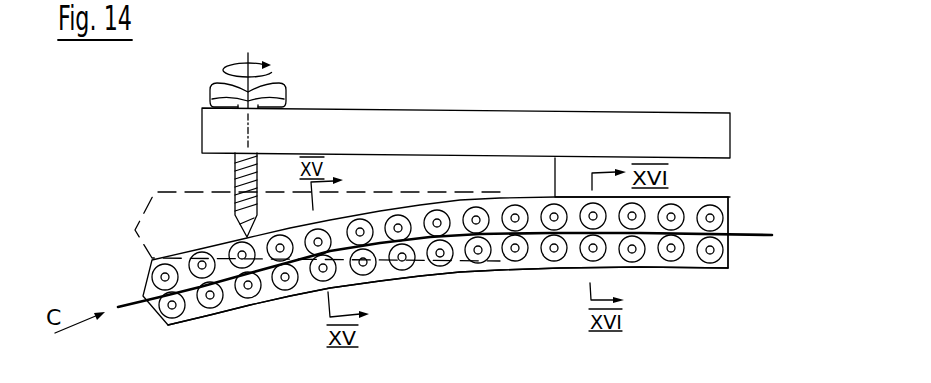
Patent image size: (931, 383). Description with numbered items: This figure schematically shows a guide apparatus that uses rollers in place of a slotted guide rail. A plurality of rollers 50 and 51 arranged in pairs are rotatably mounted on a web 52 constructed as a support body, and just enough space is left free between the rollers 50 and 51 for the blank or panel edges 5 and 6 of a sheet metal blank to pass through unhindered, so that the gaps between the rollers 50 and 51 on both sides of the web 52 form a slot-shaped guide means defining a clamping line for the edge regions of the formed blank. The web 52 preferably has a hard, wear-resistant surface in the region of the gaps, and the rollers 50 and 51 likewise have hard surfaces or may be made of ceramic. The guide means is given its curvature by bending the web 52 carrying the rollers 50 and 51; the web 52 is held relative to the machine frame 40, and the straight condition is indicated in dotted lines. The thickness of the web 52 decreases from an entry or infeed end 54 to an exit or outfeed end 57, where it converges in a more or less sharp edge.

The machine frame 40 is at (403, 108).
The rollers 50 is at (153, 316).
The rollers 51 is at (145, 265).
The exit end 57 is at (143, 281).
The web 52 is at (261, 308).
The entry end 54 is at (728, 255).
The blank edge 5 is at (465, 256).
The blank edge 6 is at (770, 236).